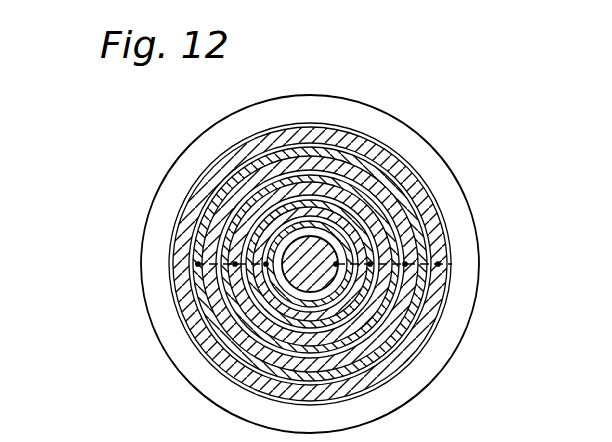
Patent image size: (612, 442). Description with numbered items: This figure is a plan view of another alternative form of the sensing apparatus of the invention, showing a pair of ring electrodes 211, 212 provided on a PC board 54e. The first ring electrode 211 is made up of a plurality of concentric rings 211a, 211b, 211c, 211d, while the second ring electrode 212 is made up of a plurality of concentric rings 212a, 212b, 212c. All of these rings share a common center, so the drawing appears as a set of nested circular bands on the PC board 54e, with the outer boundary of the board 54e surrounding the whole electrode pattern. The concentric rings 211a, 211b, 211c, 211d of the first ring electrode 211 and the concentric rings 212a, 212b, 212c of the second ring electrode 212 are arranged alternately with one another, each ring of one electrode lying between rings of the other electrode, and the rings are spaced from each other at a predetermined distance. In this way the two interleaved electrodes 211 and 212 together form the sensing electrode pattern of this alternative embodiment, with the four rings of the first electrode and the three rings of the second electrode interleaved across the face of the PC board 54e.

The PC board 54e is at (412, 400).
The first ring electrode 211 is at (376, 233).
The concentric ring 211a is at (378, 168).
The concentric ring 211b is at (410, 190).
The concentric ring 211c is at (428, 222).
The concentric ring 211d is at (450, 253).
The second ring electrode 212 is at (191, 319).
The concentric ring 212a is at (228, 337).
The concentric ring 212b is at (215, 312).
The concentric ring 212c is at (205, 282).